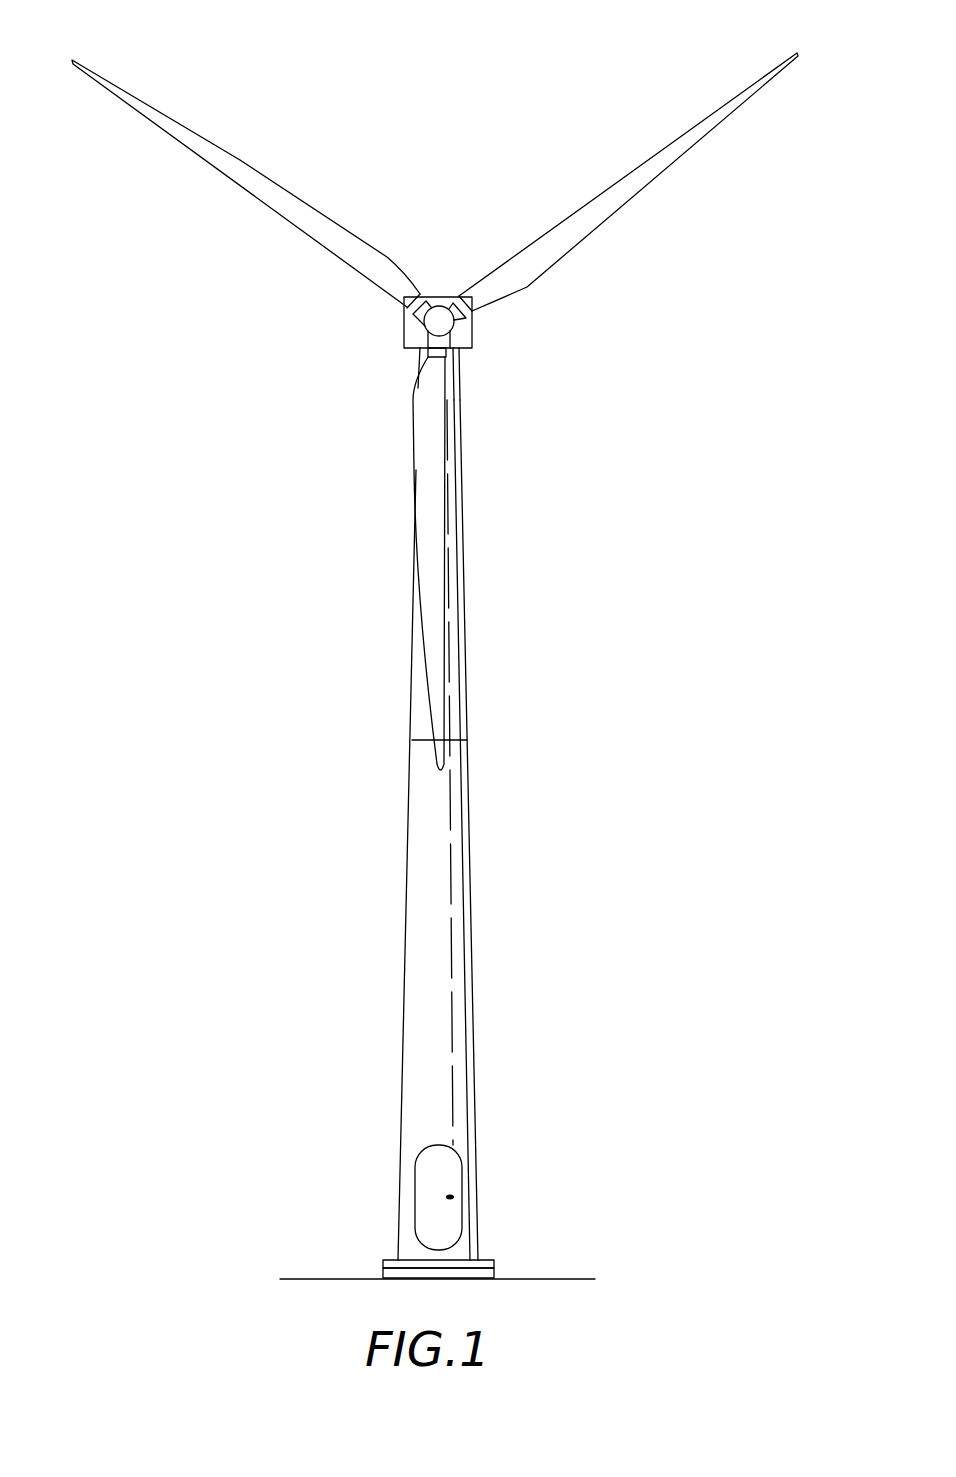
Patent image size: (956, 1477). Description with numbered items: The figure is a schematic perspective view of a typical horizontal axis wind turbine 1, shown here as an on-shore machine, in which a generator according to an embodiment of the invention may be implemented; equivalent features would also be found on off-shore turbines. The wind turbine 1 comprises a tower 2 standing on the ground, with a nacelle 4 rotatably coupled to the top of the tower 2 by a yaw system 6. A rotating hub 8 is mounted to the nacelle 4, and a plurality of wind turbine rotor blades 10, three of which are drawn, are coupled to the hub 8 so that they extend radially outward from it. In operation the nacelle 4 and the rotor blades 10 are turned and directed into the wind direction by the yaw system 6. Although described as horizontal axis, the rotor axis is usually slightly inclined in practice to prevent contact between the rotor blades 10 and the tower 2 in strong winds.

The horizontal axis wind turbine 1 is at (226, 418).
The tower 2 is at (472, 930).
The nacelle 4 is at (440, 296).
The yaw system 6 is at (462, 350).
The rotating hub 8 is at (445, 323).
The wind turbine rotor blades 10 is at (267, 188).